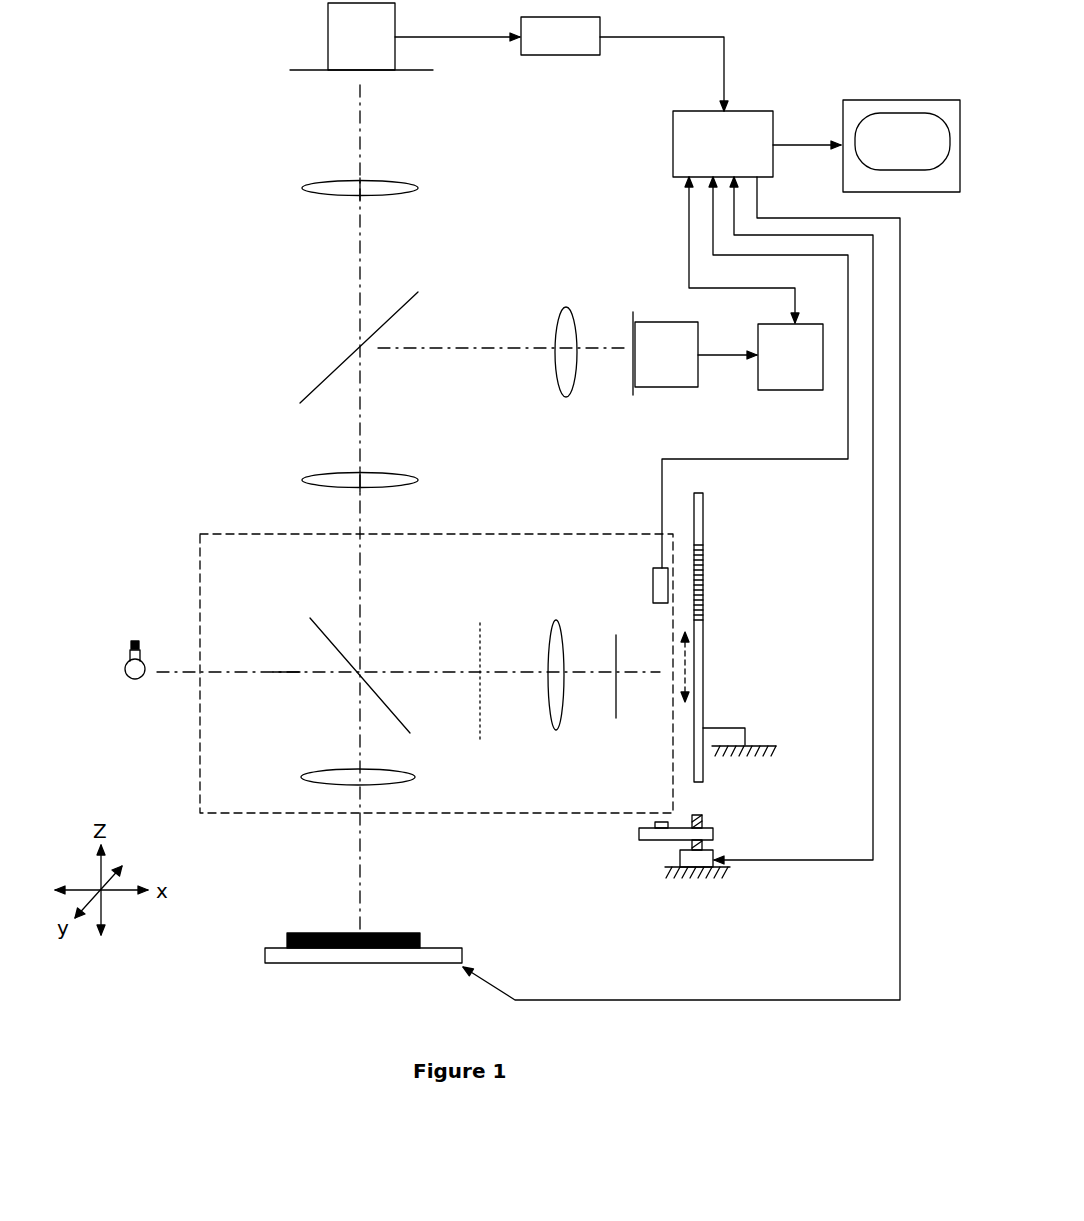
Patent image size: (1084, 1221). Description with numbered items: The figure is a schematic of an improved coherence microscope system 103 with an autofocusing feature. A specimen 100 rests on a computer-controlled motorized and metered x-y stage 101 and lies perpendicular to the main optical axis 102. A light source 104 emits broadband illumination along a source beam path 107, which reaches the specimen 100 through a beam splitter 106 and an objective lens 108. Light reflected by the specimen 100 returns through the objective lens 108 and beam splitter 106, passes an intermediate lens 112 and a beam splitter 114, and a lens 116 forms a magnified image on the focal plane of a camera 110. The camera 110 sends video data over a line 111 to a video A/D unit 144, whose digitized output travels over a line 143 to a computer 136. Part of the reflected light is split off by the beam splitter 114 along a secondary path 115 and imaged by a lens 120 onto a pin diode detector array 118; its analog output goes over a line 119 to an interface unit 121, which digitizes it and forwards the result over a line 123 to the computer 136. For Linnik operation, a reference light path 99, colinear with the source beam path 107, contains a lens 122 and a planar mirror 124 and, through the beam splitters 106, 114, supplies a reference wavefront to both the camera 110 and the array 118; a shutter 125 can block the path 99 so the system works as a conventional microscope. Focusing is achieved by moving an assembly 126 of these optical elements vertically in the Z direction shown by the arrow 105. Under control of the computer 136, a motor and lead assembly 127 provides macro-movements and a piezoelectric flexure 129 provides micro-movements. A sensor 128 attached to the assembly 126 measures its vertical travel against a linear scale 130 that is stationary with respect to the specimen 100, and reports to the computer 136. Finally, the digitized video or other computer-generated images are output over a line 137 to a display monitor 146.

The reference light path 99 is at (388, 672).
The specimen 100 is at (392, 932).
The x-y stage 101 is at (463, 955).
The main optical axis 102 is at (362, 258).
The coherence microscope system 103 is at (215, 324).
The light source 104 is at (123, 666).
The arrow 105 is at (688, 664).
The beam splitter 106 is at (310, 620).
The source beam path 107 is at (300, 673).
The objective lens 108 is at (410, 770).
The camera 110 is at (385, 18).
The line 111 is at (470, 38).
The intermediate lens 112 is at (385, 488).
The beam splitter 114 is at (342, 366).
The secondary path 115 is at (512, 352).
The lens 116 is at (385, 180).
The pin diode detector array 118 is at (663, 373).
The line 119 is at (712, 352).
The lens 120 is at (566, 306).
The interface unit 121 is at (812, 393).
The lens 122 is at (567, 633).
The line 123 is at (689, 267).
The planar mirror 124 is at (618, 685).
The shutter 125 is at (480, 626).
The assembly 126 is at (541, 532).
The motor and lead assembly 127 is at (722, 848).
The sensor 128 is at (653, 580).
The piezoelectric flexure 129 is at (640, 828).
The linear scale 130 is at (704, 560).
The computer 136 is at (686, 148).
The line 137 is at (793, 143).
The line 143 is at (645, 37).
The video A/D unit 144 is at (537, 57).
The display monitor 146 is at (925, 100).